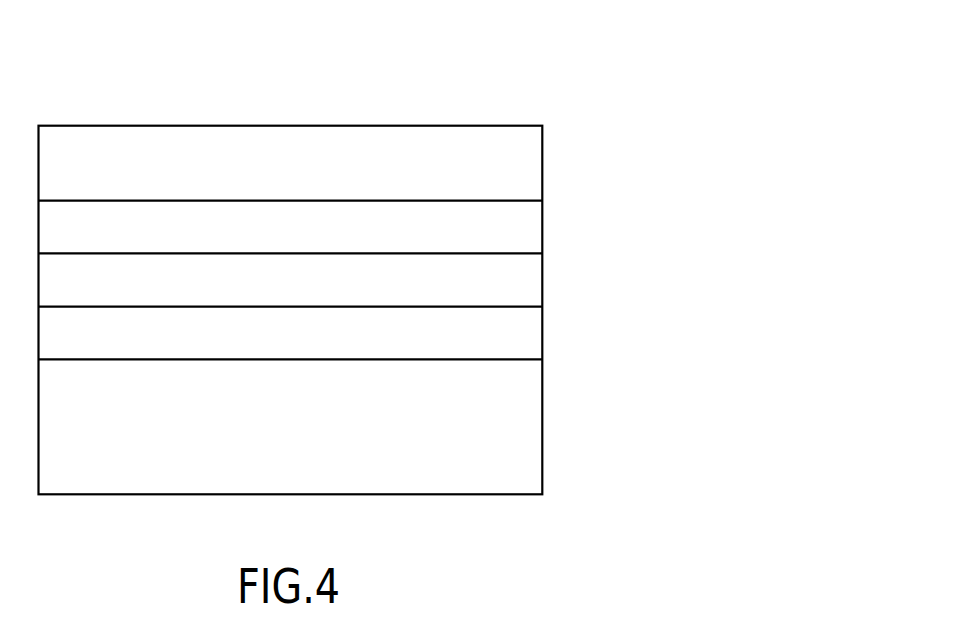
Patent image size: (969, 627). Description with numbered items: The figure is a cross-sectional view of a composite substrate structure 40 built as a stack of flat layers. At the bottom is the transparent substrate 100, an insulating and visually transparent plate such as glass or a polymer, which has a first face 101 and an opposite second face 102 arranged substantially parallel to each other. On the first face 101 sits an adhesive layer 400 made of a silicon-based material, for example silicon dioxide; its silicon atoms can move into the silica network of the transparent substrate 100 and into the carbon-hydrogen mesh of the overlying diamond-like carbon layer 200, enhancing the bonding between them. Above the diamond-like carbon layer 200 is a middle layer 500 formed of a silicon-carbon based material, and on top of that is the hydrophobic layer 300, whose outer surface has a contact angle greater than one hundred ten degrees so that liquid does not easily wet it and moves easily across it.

The composite substrate structure 40 is at (560, 90).
The hydrophobic layer 300 is at (527, 164).
The middle layer 500 is at (527, 217).
The diamond-like carbon layer 200 is at (527, 274).
The adhesive layer 400 is at (527, 328).
The first face 101 is at (523, 358).
The transparent substrate 100 is at (527, 433).
The second face 102 is at (525, 495).